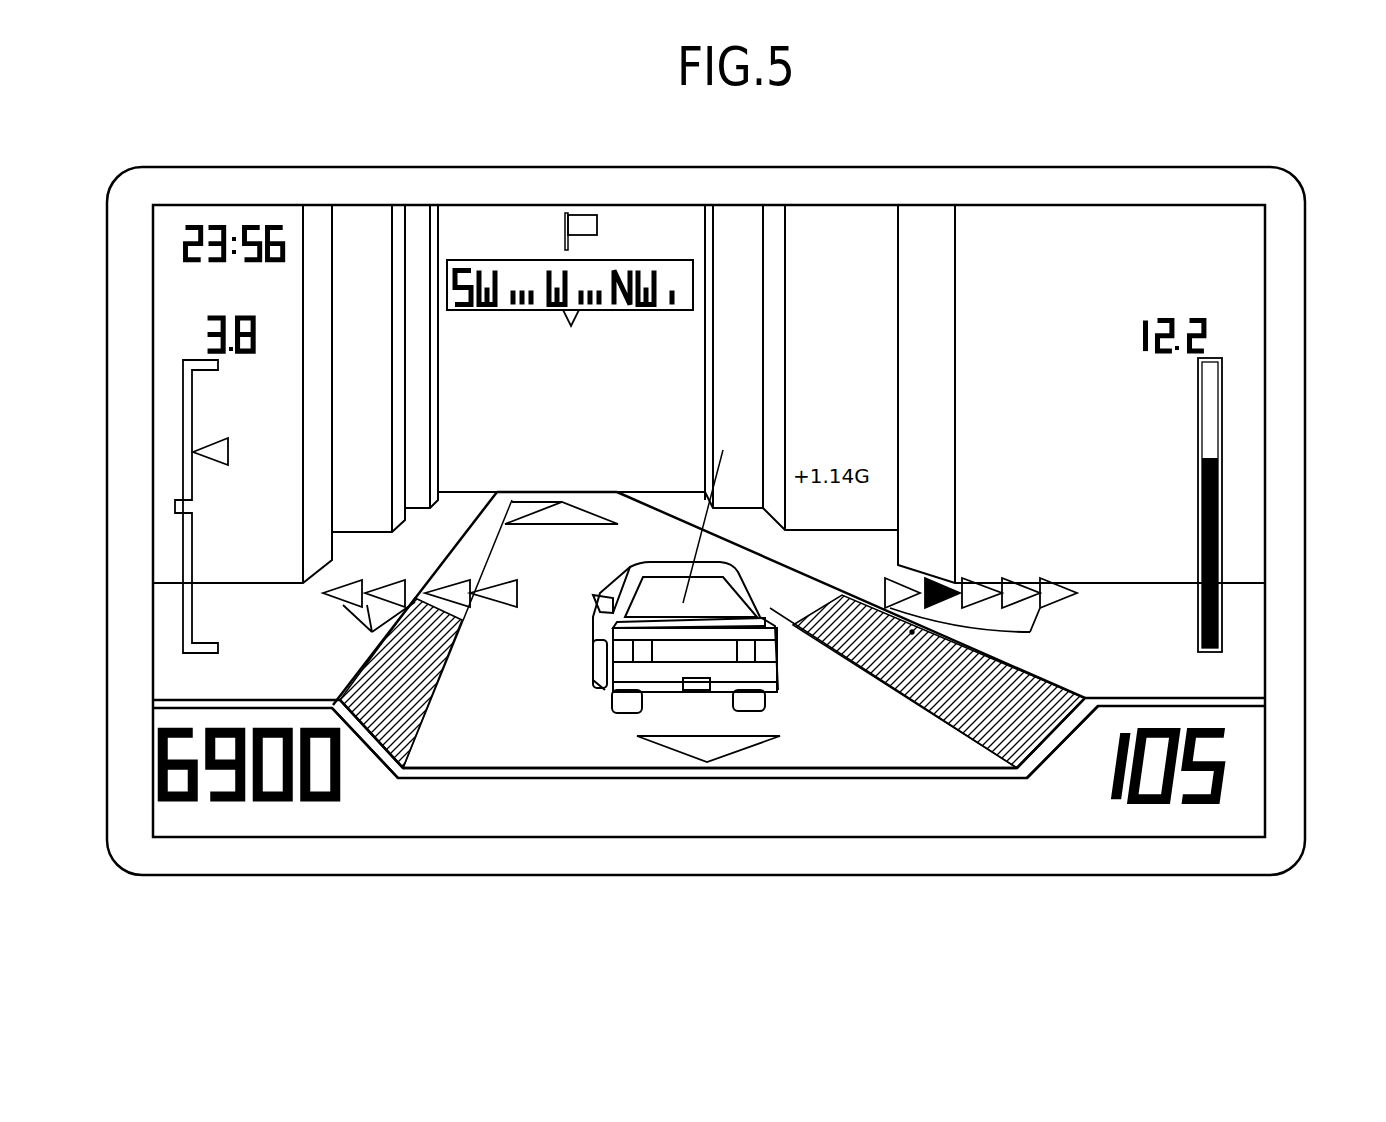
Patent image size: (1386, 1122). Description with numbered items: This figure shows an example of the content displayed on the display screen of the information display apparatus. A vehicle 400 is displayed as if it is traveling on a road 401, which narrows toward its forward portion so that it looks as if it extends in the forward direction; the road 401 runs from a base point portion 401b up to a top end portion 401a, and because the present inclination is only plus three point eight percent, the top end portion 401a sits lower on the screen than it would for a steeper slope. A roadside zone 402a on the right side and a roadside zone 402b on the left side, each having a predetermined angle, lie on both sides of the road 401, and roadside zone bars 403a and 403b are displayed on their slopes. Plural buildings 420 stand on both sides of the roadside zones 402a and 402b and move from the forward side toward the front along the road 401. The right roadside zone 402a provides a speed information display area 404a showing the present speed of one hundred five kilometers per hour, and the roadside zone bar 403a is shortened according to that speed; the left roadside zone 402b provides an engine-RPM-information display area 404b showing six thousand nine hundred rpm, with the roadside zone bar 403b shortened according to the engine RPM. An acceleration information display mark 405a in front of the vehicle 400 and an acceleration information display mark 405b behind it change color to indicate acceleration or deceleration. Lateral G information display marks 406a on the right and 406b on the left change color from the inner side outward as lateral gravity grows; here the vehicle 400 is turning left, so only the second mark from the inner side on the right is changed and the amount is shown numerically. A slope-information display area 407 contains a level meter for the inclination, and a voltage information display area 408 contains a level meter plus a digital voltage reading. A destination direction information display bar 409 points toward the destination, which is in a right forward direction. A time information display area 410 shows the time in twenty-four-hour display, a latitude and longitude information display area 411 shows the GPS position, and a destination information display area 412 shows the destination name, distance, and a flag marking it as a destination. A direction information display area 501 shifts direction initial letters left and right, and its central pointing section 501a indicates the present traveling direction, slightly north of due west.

The vehicle 400 is at (782, 675).
The road 401 is at (452, 740).
The top end portion 401a is at (520, 490).
The base point portion 401b is at (511, 772).
The roadside zone 402a is at (1053, 738).
The roadside zone 402b is at (368, 740).
The roadside zone bar 403a is at (932, 698).
The roadside zone bar 403b is at (433, 665).
The speed information display area 404a is at (1232, 788).
The engine-RPM-information display area 404b is at (182, 808).
The acceleration information display mark 405a is at (572, 500).
The acceleration information display mark 405b is at (640, 740).
The lateral G information display marks 406a is at (982, 621).
The lateral G information display marks 406b is at (417, 605).
The slope-information display area 407 is at (202, 433).
The voltage information display area 408 is at (1222, 437).
The destination direction information display bar 409 is at (690, 560).
The time information display area 410 is at (180, 220).
The latitude and longitude information display area 411 is at (711, 825).
The destination information display area 412 is at (650, 222).
The buildings 420 is at (435, 222).
The direction information display area 501 is at (530, 258).
The pointing section 501a is at (571, 326).